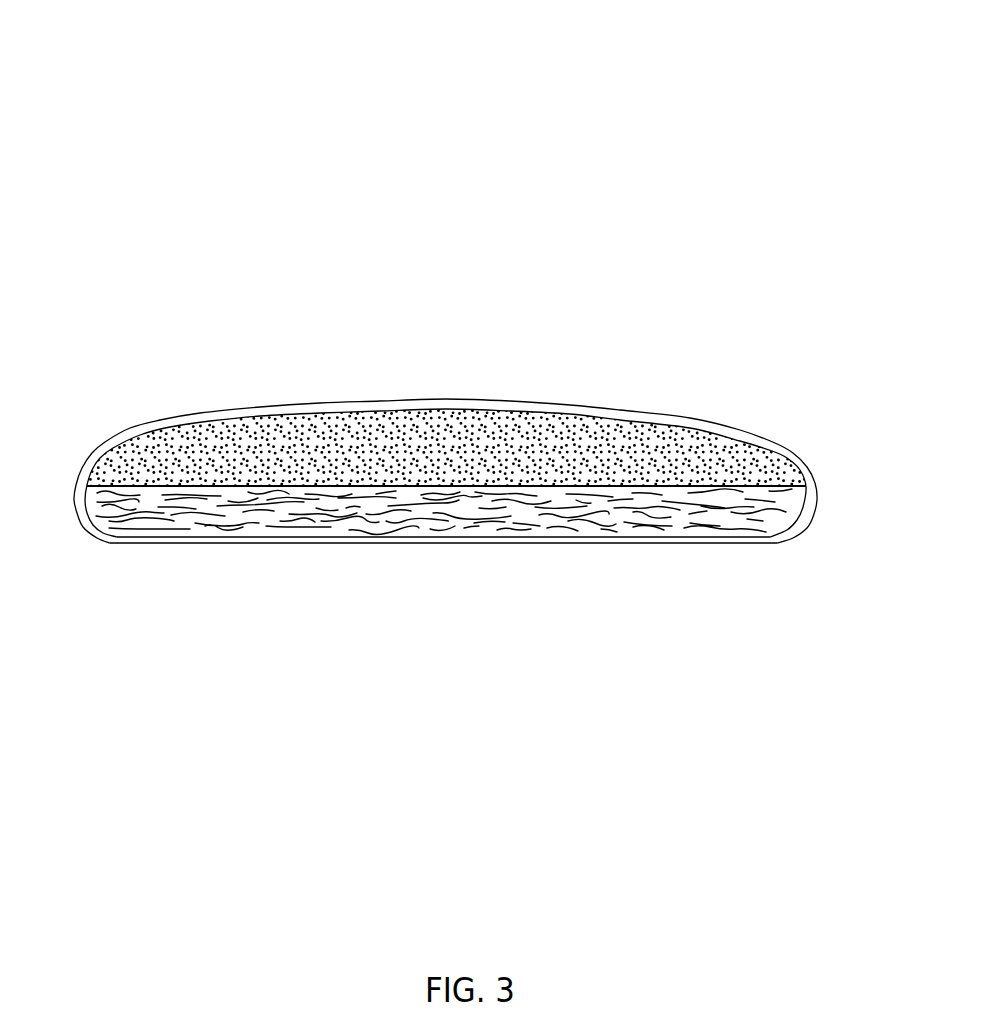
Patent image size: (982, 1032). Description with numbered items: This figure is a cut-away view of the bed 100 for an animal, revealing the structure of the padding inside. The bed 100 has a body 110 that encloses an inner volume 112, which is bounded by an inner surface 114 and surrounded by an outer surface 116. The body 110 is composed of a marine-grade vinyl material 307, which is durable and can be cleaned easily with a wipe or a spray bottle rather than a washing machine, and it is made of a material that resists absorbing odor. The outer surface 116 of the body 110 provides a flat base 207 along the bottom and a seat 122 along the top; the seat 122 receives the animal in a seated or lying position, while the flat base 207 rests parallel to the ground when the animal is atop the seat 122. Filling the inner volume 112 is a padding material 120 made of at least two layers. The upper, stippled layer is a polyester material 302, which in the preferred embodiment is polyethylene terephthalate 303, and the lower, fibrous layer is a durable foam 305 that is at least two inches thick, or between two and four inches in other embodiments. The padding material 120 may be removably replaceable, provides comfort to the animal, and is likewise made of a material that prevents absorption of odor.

The bed 100 is at (712, 73).
The body 110 is at (245, 395).
The inner volume 112 is at (680, 438).
The inner surface 114 is at (755, 442).
The outer surface 116 is at (308, 405).
The padding material 120 is at (387, 513).
The seat 122 is at (451, 398).
The flat base 207 is at (763, 548).
The polyester material 302 is at (158, 453).
The polyethylene terephthalate 303 is at (118, 472).
The durable foam 305 is at (183, 525).
The marine-grade vinyl material 307 is at (517, 405).